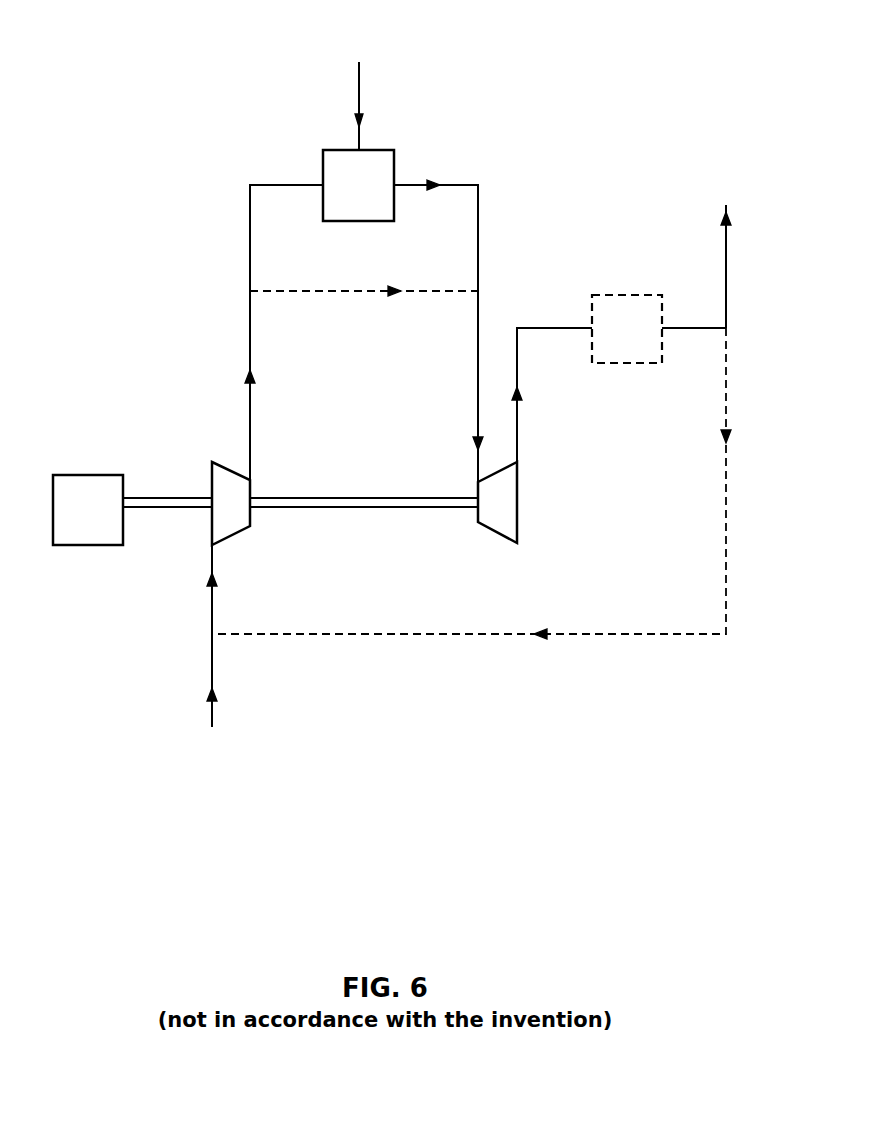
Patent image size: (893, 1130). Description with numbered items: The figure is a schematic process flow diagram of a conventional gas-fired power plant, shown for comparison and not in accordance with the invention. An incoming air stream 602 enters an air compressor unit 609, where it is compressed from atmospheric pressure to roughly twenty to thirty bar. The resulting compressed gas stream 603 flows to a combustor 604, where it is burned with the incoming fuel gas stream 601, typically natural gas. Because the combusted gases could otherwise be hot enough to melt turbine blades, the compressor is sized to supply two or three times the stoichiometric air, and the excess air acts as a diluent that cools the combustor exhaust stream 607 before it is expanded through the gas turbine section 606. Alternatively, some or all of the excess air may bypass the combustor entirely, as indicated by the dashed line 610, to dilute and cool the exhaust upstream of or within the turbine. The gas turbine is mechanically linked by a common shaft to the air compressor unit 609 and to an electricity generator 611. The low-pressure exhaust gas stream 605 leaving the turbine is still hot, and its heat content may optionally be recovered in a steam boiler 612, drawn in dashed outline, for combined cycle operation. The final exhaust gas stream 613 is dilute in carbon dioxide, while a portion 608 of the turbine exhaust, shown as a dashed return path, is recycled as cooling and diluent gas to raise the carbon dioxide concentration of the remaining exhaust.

The incoming fuel gas stream 601 is at (358, 93).
The incoming air stream 602 is at (211, 654).
The compressed gas stream 603 is at (262, 332).
The combustor 604 is at (323, 160).
The low-pressure exhaust gas stream 605 is at (552, 395).
The gas turbine section 606 is at (517, 480).
The combustor exhaust stream 607 is at (438, 317).
The returned portion of turbine exhaust gas 608 is at (471, 483).
The air compressor unit 609 is at (212, 478).
The bypass air line 610 is at (364, 279).
The electricity generator 611 is at (93, 545).
The steam boiler 612 is at (633, 295).
The exhaust gas stream 613 is at (726, 253).